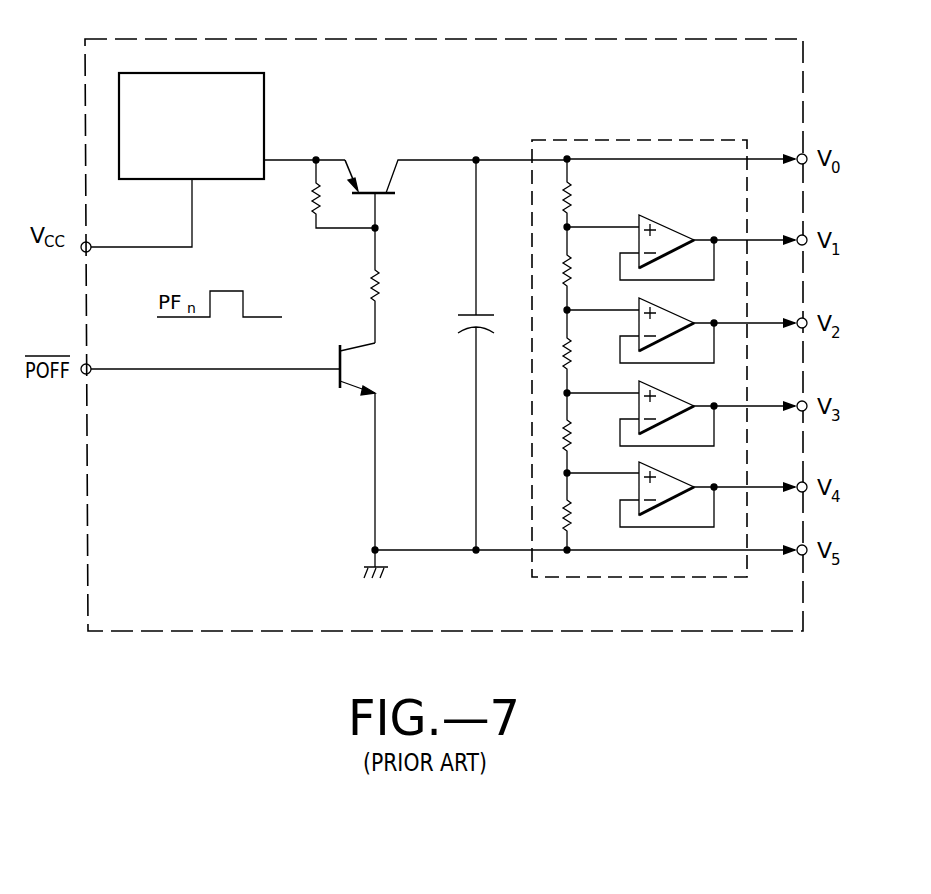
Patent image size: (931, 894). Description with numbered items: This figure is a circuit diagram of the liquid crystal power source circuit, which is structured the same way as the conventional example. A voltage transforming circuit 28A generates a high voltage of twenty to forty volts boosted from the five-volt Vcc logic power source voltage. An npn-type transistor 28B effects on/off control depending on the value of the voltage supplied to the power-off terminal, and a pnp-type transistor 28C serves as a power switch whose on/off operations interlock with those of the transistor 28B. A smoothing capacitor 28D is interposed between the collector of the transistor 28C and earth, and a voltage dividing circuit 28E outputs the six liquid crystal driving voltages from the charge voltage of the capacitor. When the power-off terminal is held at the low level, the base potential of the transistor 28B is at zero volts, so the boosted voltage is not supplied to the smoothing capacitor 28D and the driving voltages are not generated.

The voltage transforming circuit 28A is at (196, 73).
The npn-type transistor 28B is at (341, 388).
The pnp-type transistor 28C is at (375, 170).
The smoothing capacitor 28D is at (473, 323).
The voltage dividing circuit 28E is at (638, 140).